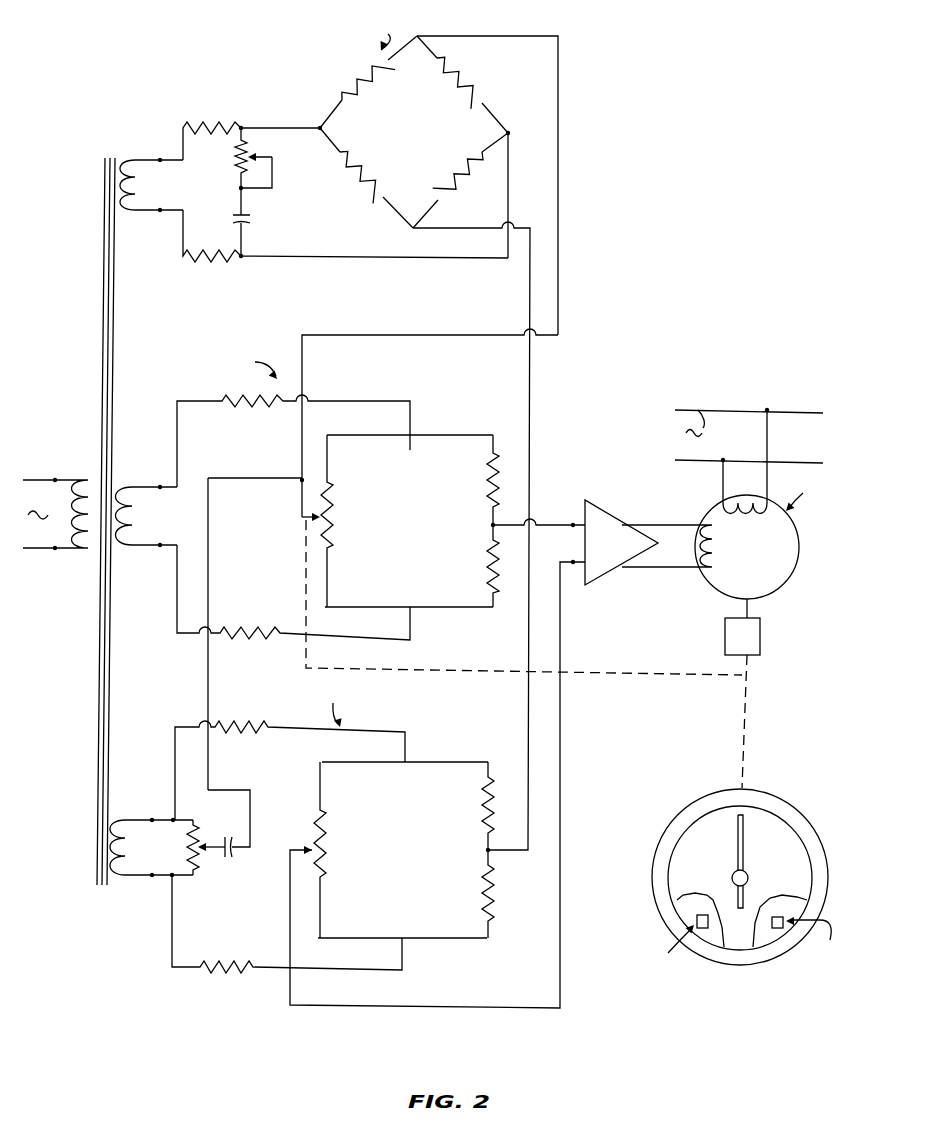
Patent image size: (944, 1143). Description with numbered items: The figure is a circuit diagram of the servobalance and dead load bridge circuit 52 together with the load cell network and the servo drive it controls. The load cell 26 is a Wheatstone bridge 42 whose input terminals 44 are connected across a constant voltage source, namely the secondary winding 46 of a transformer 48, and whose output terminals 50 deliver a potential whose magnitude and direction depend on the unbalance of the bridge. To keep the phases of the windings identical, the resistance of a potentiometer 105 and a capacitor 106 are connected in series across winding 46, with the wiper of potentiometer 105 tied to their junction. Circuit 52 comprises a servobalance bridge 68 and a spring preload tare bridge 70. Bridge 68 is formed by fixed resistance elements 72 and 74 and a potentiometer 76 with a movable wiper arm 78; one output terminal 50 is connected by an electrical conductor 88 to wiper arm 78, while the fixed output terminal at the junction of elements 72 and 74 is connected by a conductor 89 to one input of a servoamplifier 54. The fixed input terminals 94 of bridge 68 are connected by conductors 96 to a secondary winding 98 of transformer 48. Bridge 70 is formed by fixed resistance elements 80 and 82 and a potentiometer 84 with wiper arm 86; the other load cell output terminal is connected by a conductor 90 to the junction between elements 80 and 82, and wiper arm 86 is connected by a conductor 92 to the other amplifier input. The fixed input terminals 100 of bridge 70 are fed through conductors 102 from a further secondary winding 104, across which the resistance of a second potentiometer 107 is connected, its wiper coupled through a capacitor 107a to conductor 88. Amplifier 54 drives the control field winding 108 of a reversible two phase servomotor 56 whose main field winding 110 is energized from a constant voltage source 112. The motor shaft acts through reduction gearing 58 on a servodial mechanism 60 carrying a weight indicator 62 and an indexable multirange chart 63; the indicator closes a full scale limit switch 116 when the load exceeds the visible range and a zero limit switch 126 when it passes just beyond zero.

The load cell 26 is at (338, 95).
The Wheatstone bridge 42 is at (474, 90).
The input terminals 44 is at (320, 130).
The secondary winding 46 is at (128, 158).
The transformer 48 is at (103, 333).
The output terminals 50 is at (419, 35).
The servobalance and dead load bridge circuit 52 is at (198, 982).
The servoamplifier 54 is at (602, 505).
The servomotor 56 is at (796, 573).
The reduction gearing 58 is at (760, 636).
The servodial mechanism 60 is at (828, 878).
The weight indicator 62 is at (746, 848).
The multirange chart 63 is at (775, 806).
The servobalance bridge 68 is at (455, 608).
The spring preload tare bridge 70 is at (451, 939).
The fixed resistance element 72 is at (490, 484).
The fixed resistance element 74 is at (490, 560).
The potentiometer 76 is at (333, 518).
The movable wiper arm 78 is at (300, 520).
The fixed resistance element 80 is at (486, 817).
The fixed resistance element 82 is at (486, 888).
The potentiometer 84 is at (325, 848).
The movable wiper arm 86 is at (298, 847).
The electrical conductor 88 is at (392, 335).
The electrical conductor 89 is at (548, 524).
The electrical conductor 90 is at (525, 708).
The electrical conductor 92 is at (564, 630).
The fixed input terminals 94 is at (410, 450).
The electrical conductors 96 is at (358, 403).
The secondary winding 98 is at (133, 521).
The fixed input terminals 100 is at (405, 763).
The electrical conductors 102 is at (282, 733).
The secondary winding 104 is at (126, 845).
The potentiometer 105 is at (240, 172).
The capacitor 106 is at (254, 220).
The second potentiometer 107 is at (193, 875).
The capacitor 107a is at (232, 858).
The control field winding 108 is at (713, 565).
The main field winding 110 is at (745, 518).
The constant voltage source 112 is at (698, 410).
The full scale limit switch 116 is at (782, 916).
The zero limit switch 126 is at (696, 917).